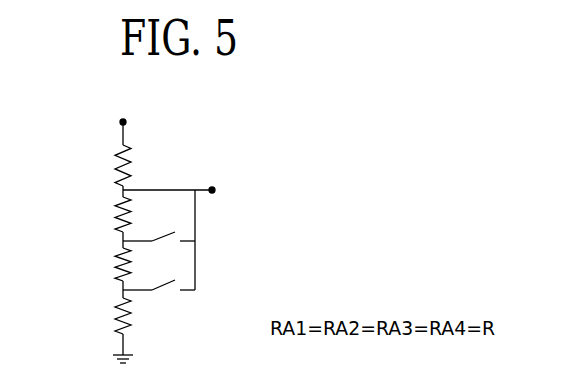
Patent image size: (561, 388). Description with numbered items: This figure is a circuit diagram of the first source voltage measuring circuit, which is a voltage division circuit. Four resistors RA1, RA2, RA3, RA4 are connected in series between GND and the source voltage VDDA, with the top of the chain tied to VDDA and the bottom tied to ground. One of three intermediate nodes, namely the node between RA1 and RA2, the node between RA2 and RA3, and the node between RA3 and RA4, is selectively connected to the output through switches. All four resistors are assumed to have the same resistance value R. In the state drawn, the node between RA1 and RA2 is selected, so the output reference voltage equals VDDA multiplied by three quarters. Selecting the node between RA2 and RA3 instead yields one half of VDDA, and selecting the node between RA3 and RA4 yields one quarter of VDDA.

The resistor RA1 is at (98, 165).
The resistor RA2 is at (98, 214).
The resistor RA3 is at (98, 264).
The resistor RA4 is at (98, 316).
The source voltage VDDA is at (123, 120).